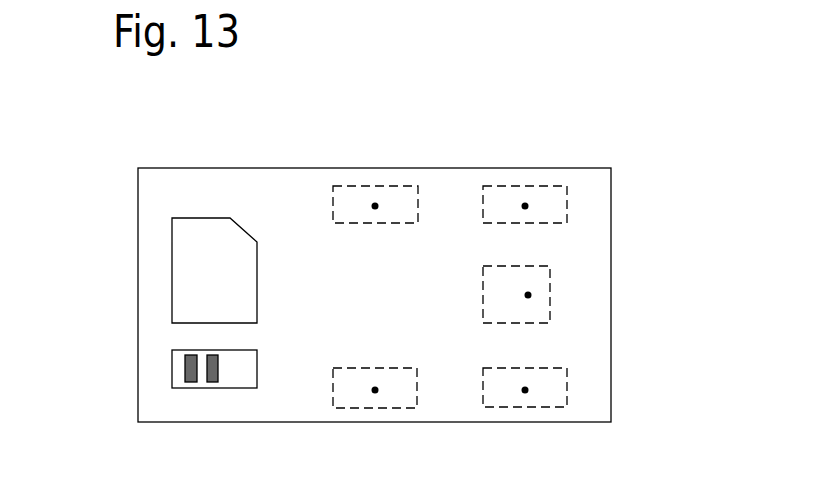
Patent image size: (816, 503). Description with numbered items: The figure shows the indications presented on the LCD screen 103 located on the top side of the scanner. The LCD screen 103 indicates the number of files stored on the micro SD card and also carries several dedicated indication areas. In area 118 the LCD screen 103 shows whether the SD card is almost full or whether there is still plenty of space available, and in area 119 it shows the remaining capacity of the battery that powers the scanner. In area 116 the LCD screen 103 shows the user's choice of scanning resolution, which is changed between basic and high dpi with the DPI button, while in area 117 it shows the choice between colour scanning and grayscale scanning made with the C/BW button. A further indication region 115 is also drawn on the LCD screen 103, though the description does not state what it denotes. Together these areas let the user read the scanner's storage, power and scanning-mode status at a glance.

The LCD screen 103 is at (139, 168).
The touch region (center right) 115 is at (528, 295).
The resolution indication 116 is at (525, 390).
The colour/grayscale indication 117 is at (525, 206).
The SD card capacity indication 118 is at (152, 272).
The battery capacity indication 119 is at (152, 368).